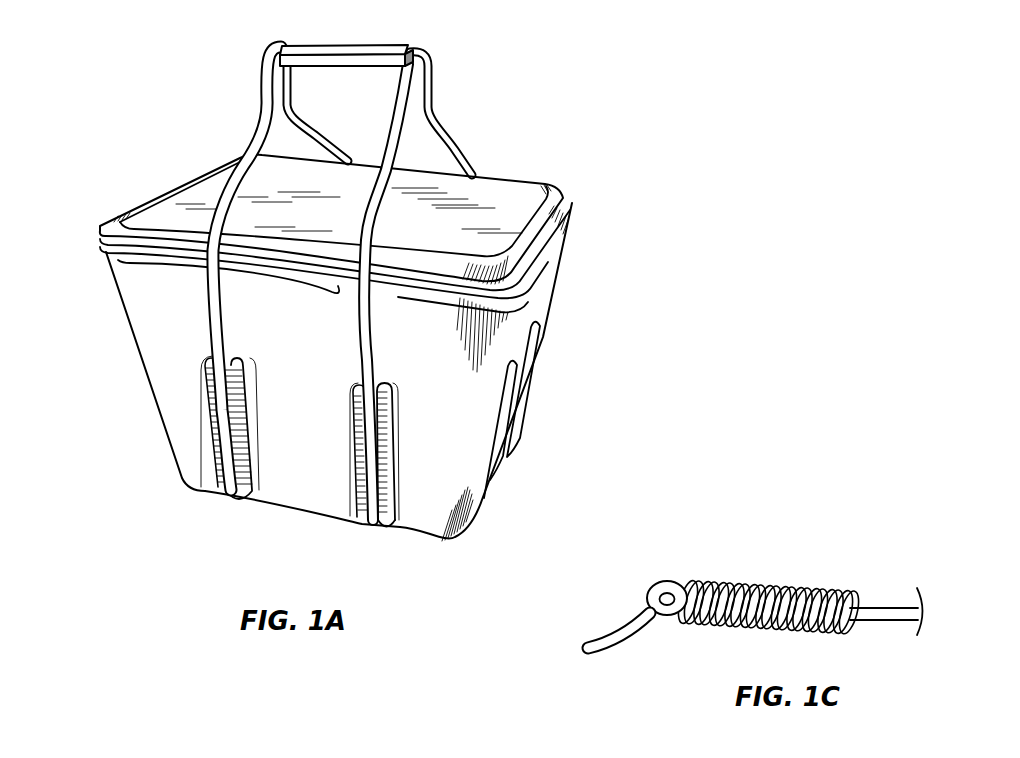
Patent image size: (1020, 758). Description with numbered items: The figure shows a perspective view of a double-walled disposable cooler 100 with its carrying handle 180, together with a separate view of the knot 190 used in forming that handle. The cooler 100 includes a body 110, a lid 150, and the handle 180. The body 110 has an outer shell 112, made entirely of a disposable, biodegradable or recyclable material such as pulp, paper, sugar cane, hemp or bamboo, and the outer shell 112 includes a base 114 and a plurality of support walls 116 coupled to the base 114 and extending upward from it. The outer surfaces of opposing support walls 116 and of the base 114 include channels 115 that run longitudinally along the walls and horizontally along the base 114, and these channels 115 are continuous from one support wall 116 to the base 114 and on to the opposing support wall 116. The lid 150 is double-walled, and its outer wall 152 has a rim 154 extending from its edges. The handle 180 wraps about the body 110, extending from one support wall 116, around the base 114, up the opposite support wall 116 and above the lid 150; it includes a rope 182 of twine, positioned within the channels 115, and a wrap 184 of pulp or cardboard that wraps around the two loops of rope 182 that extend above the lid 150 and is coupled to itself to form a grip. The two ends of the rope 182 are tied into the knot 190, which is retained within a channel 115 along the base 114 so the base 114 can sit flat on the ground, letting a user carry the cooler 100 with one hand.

In FIG. 1A, the double-walled disposable cooler 100 is at (340, 284).
In FIG. 1A, the body 110 is at (336, 381).
In FIG. 1A, the outer shell 112 is at (530, 317).
In FIG. 1A, the base 114 is at (342, 519).
In FIG. 1A, the channels 115 is at (383, 419).
In FIG. 1A, the support walls 116 is at (284, 466).
In FIG. 1A, the lid 150 is at (375, 220).
In FIG. 1A, the outer wall 152 is at (553, 194).
In FIG. 1A, the rim 154 is at (550, 228).
In FIG. 1A, the handle 180 is at (379, 264).
In FIG. 1A, the rope 182 is at (443, 136).
In FIG. 1A, the wrap 184 is at (300, 44).
In FIG. 1C, the knot 190 is at (834, 545).